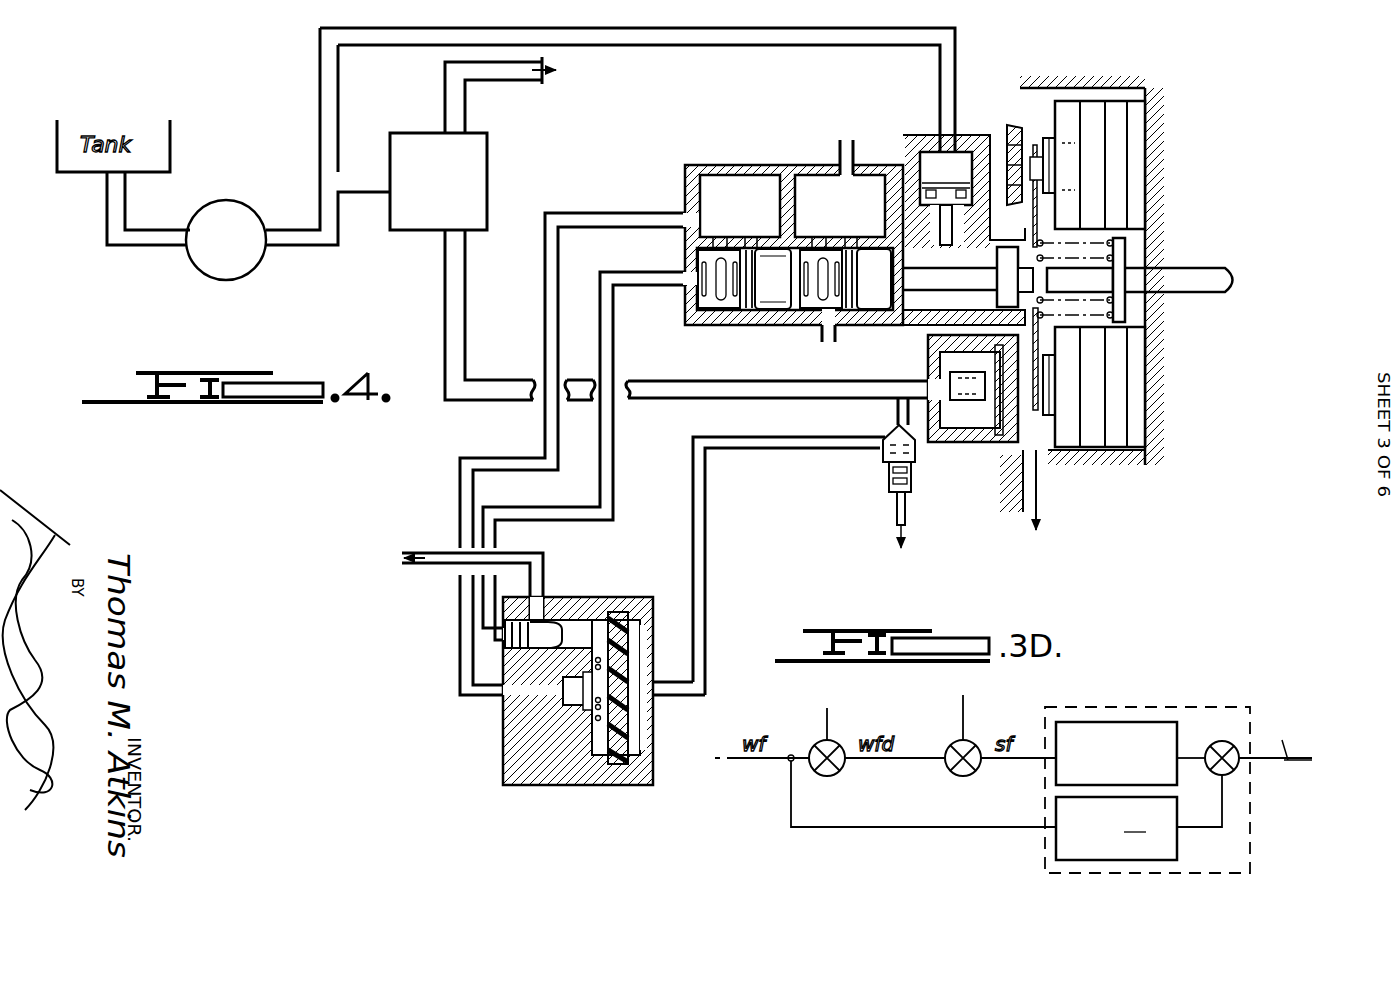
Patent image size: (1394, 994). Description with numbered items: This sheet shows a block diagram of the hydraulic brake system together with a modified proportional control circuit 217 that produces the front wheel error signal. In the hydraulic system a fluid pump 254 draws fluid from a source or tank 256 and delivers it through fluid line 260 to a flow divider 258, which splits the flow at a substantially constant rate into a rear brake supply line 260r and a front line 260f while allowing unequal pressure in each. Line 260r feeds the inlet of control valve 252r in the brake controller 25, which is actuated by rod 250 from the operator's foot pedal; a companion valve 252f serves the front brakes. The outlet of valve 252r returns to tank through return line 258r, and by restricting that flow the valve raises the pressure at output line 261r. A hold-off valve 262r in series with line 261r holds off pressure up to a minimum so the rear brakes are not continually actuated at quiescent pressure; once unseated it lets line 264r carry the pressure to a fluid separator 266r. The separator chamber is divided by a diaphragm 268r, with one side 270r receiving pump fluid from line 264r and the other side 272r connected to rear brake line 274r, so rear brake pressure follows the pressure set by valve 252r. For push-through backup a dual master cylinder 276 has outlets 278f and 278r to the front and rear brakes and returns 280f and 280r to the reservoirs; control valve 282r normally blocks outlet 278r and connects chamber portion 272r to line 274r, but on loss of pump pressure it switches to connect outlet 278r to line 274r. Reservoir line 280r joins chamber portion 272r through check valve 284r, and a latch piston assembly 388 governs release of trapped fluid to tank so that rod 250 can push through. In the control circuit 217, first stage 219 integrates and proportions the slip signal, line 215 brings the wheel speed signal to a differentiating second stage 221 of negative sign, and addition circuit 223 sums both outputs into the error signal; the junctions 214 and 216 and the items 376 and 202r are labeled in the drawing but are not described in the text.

In FIG. 4, the brake controller 25 is at (1150, 168).
In FIG. 4, the rod 250 is at (1195, 265).
In FIG. 4, the control valve 252f is at (1030, 136).
In FIG. 4, the control valve 252r is at (979, 449).
In FIG. 4, the fluid pump 254 is at (214, 277).
In FIG. 4, the source 256 is at (105, 212).
In FIG. 4, the flow divider 258 is at (480, 162).
In FIG. 4, the return line 258r is at (1047, 500).
In FIG. 4, the fluid line 260 is at (326, 250).
In FIG. 4, the front line 260f is at (465, 108).
In FIG. 4, the rear brake supply line 260r is at (447, 318).
In FIG. 4, the output line 261r is at (898, 408).
In FIG. 4, the hold-off valve 262r is at (928, 458).
In FIG. 4, the line 264r is at (741, 446).
In FIG. 4, the fluid separator 266r is at (608, 658).
In FIG. 4, the diaphragm 268r is at (628, 652).
In FIG. 4, the chamber side 270r is at (640, 716).
In FIG. 4, the chamber side 272r is at (597, 732).
In FIG. 4, the rear brake line 274r is at (433, 565).
In FIG. 4, the dual master cylinder 276 is at (753, 152).
In FIG. 4, the outlet 278f is at (820, 333).
In FIG. 4, the outlet 278r is at (683, 273).
In FIG. 4, the return 280f is at (850, 150).
In FIG. 4, the return 280r is at (683, 214).
In FIG. 4, the control valve 282r is at (549, 622).
In FIG. 4, the check valve 284r is at (583, 688).
In FIG. 4, the return line 376 is at (768, 18).
In FIG. 4, the latch piston assembly 388 is at (946, 165).
In FIG. 4, the reverse sensor nozzle 202r is at (887, 467).
In FIG. 3D, the summing junction 214 is at (838, 745).
In FIG. 3D, the line 215 is at (790, 798).
In FIG. 3D, the summing junction 216 is at (975, 745).
In FIG. 3D, the proportional control circuit 217 is at (1088, 702).
In FIG. 3D, the first stage 219 is at (1148, 722).
In FIG. 3D, the second stage 221 is at (1066, 850).
In FIG. 3D, the addition circuit 223 is at (1232, 740).